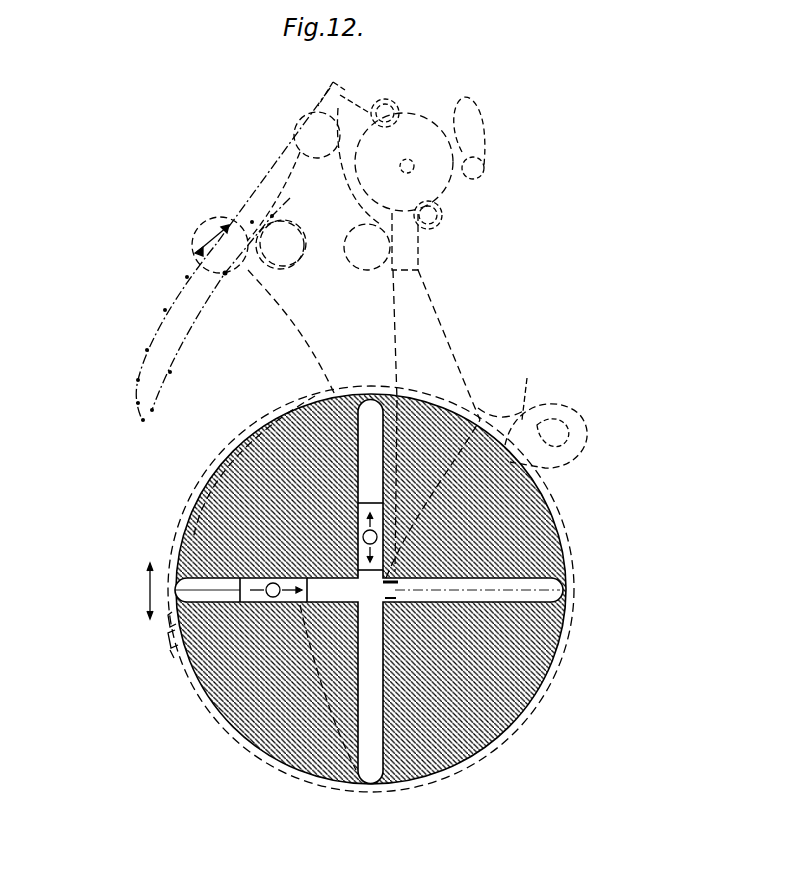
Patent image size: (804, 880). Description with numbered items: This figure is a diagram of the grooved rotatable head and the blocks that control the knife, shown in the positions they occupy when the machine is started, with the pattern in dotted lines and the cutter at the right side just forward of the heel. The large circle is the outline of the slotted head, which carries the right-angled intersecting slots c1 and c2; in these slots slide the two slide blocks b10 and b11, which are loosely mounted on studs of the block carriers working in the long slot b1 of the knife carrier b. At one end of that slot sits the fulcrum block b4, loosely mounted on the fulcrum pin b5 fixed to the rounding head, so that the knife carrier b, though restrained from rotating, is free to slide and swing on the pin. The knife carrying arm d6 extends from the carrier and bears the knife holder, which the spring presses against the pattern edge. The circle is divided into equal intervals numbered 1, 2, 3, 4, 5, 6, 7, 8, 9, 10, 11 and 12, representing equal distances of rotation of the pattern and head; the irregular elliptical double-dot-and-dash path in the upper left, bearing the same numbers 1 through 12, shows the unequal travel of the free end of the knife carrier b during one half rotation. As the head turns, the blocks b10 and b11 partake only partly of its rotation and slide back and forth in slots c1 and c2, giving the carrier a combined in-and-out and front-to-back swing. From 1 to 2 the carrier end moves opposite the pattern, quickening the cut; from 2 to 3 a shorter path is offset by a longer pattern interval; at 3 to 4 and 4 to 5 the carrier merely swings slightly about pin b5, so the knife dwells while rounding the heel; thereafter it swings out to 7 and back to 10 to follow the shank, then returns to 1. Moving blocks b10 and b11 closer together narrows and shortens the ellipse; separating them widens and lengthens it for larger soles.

The interval 1 is at (210, 747).
The interval 2 is at (252, 222).
The interval 3 is at (315, 800).
The interval 4 is at (226, 273).
The interval 5 is at (170, 372).
The interval 6 is at (152, 410).
The interval 7 is at (143, 420).
The interval 8 is at (138, 403).
The interval 9 is at (138, 380).
The interval 10 is at (147, 350).
The interval 11 is at (165, 310).
The interval 12 is at (187, 277).
The knife carrier b is at (448, 323).
The long slot b1 is at (546, 411).
The fulcrum block b4 is at (520, 462).
The fulcrum pin b5 is at (542, 498).
The slide block b10 is at (125, 591).
The slide block b11 is at (369, 592).
The slot of rotatable head c1 is at (384, 793).
The slot of rotatable head c2 is at (572, 612).
The knife carrying arm d6 is at (398, 370).